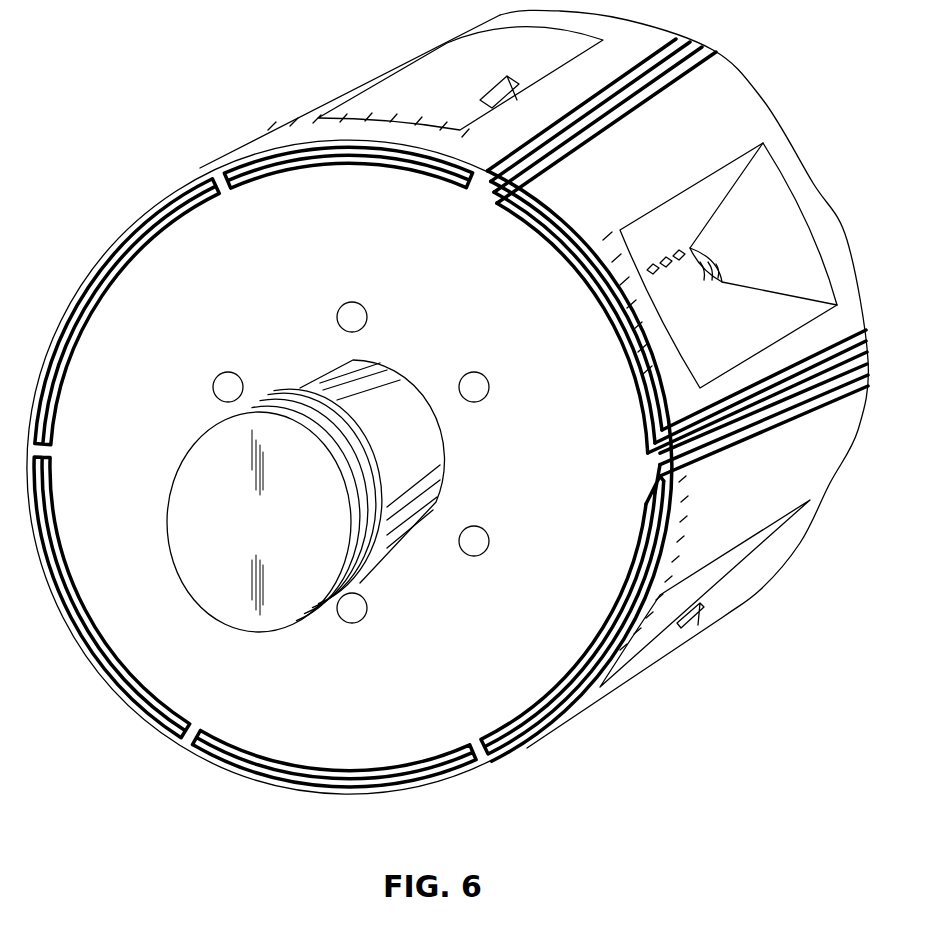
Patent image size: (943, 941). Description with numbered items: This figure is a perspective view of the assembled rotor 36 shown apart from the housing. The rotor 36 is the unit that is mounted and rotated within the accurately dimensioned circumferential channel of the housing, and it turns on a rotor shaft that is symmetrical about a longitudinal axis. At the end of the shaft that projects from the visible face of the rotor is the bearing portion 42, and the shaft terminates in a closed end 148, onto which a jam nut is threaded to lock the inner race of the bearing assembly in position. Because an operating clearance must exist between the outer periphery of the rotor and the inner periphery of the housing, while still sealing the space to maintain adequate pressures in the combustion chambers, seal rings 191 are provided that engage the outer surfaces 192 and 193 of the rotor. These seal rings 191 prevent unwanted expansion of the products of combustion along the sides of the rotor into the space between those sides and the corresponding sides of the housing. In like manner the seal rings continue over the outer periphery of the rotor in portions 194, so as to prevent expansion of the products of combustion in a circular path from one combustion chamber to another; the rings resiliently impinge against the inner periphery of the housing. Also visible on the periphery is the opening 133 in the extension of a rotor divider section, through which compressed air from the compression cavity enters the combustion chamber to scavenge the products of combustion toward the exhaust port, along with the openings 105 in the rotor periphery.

The rotor 36 is at (176, 789).
The bearing portion 42 is at (423, 520).
The windows / openings 105 is at (506, 92).
The opening 133 is at (668, 258).
The closed end of the rotor shaft 148 is at (279, 558).
The seal rings 191 is at (107, 273).
The outer surface of the rotor 192 is at (556, 476).
The outer surface of the rotor 193 is at (857, 438).
The portions of the seal rings 194 is at (625, 112).